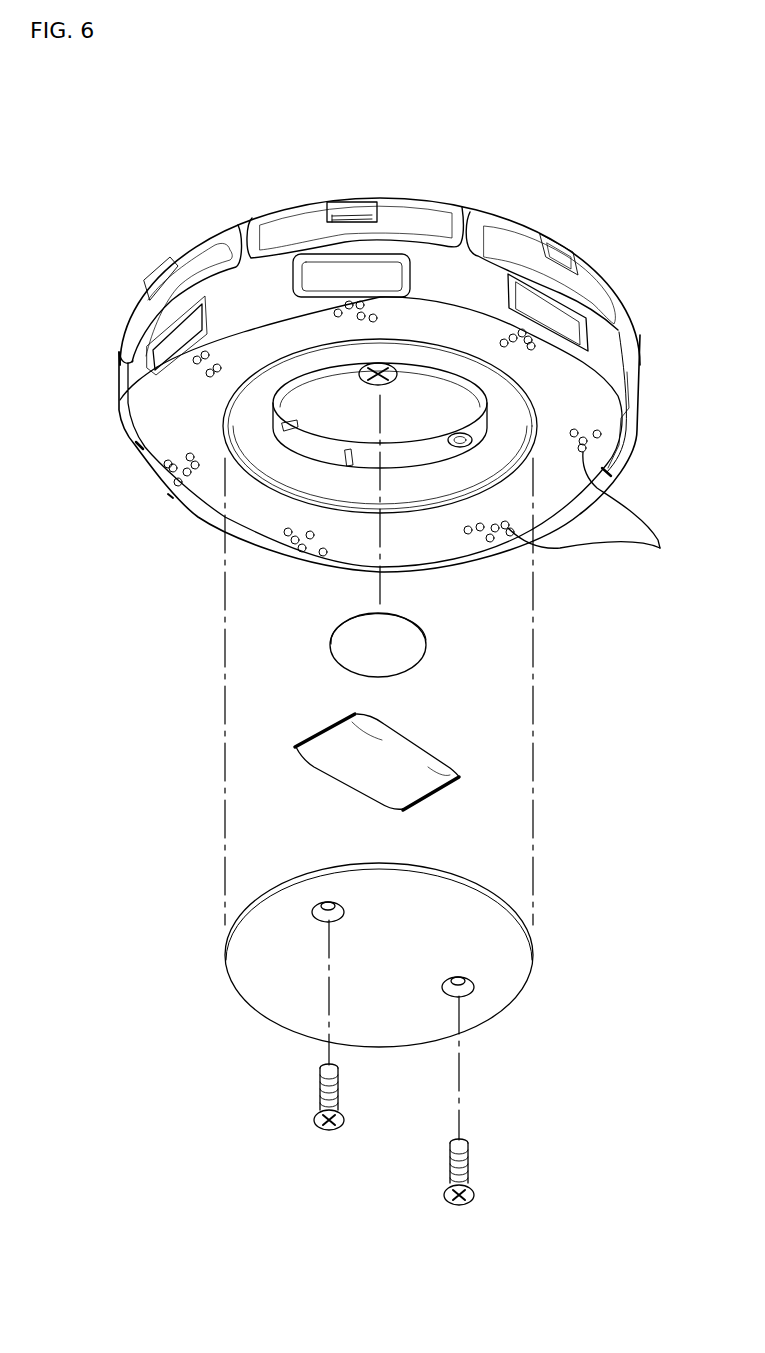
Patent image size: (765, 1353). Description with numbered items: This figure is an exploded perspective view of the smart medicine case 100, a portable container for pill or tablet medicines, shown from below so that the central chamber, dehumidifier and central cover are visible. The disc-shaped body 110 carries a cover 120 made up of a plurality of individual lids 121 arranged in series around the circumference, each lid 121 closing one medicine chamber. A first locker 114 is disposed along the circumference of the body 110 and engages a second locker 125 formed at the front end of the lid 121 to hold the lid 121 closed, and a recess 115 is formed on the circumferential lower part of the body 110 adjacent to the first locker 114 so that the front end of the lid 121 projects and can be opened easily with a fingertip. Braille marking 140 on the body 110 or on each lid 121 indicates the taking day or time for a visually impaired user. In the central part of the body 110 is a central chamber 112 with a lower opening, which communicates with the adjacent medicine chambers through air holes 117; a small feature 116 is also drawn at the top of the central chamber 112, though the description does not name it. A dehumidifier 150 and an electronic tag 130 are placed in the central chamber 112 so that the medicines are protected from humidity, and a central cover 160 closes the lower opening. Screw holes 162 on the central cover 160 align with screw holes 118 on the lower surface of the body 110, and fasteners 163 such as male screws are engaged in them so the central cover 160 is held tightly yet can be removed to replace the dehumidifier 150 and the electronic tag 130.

The smart medicine case 100 is at (165, 97).
The body 110 is at (142, 507).
The central chamber 112 is at (433, 390).
The first locker 114 is at (363, 217).
The recess 115 is at (177, 333).
The screw boss 116 is at (397, 370).
The air holes 117 is at (478, 427).
The screw hole 118 is at (462, 441).
The cover 120 is at (178, 230).
The individual lid 121 is at (263, 222).
The second locker 125 is at (345, 212).
The electronic tag 130 is at (428, 628).
The Braille marking 140 is at (607, 515).
The dehumidifier 150 is at (440, 765).
The central cover 160 is at (513, 965).
The screw hole 162 is at (465, 992).
The fastener 163 is at (468, 1165).